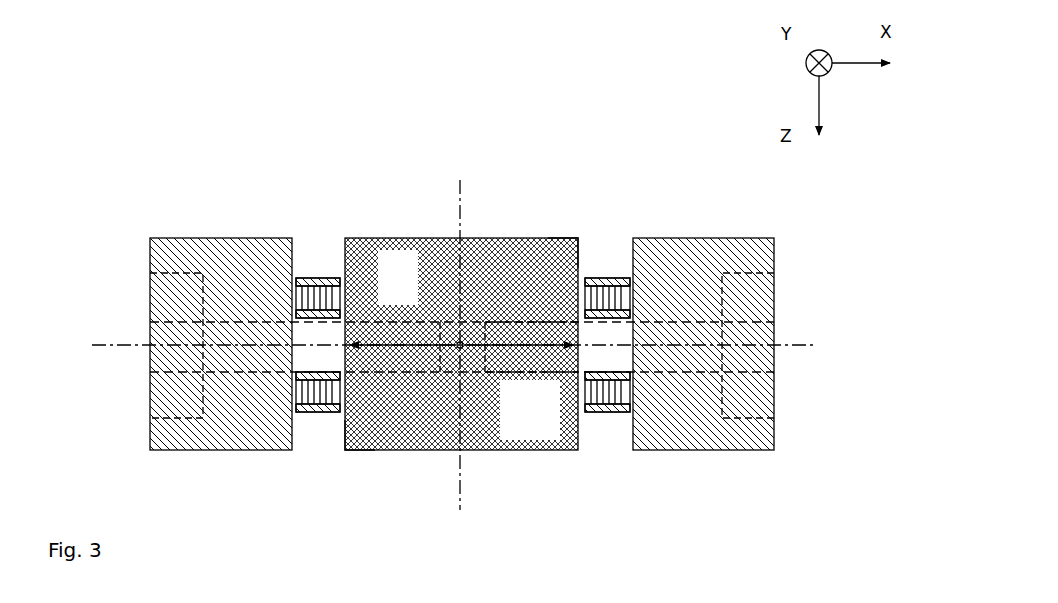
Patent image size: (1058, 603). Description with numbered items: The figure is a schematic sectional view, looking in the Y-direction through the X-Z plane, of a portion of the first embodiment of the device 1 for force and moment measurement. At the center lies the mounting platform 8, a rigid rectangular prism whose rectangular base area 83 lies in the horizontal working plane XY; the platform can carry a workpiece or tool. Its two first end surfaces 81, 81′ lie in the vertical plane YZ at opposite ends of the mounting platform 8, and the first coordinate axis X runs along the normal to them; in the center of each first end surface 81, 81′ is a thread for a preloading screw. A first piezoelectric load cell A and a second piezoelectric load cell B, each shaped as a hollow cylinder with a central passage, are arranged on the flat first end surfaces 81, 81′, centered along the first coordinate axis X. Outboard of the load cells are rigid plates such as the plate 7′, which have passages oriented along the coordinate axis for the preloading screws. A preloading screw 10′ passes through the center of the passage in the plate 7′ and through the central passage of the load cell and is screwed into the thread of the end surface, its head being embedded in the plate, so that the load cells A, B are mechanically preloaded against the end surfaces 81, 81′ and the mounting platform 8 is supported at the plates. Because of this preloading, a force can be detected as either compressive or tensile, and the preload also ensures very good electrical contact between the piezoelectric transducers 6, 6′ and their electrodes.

The device 1 is at (146, 125).
The plate 7′ is at (161, 256).
The preloading screw 10′ is at (159, 317).
The mounting platform 8 is at (404, 292).
The first end surface 81 is at (345, 433).
The first end surface 81′ is at (582, 252).
The base area 83 is at (540, 422).
The first piezoelectric load cell A is at (328, 282).
The second piezoelectric load cell B is at (598, 410).
The piezoelectric transducer 6 is at (318, 298).
The piezoelectric transducer 6′ is at (318, 392).